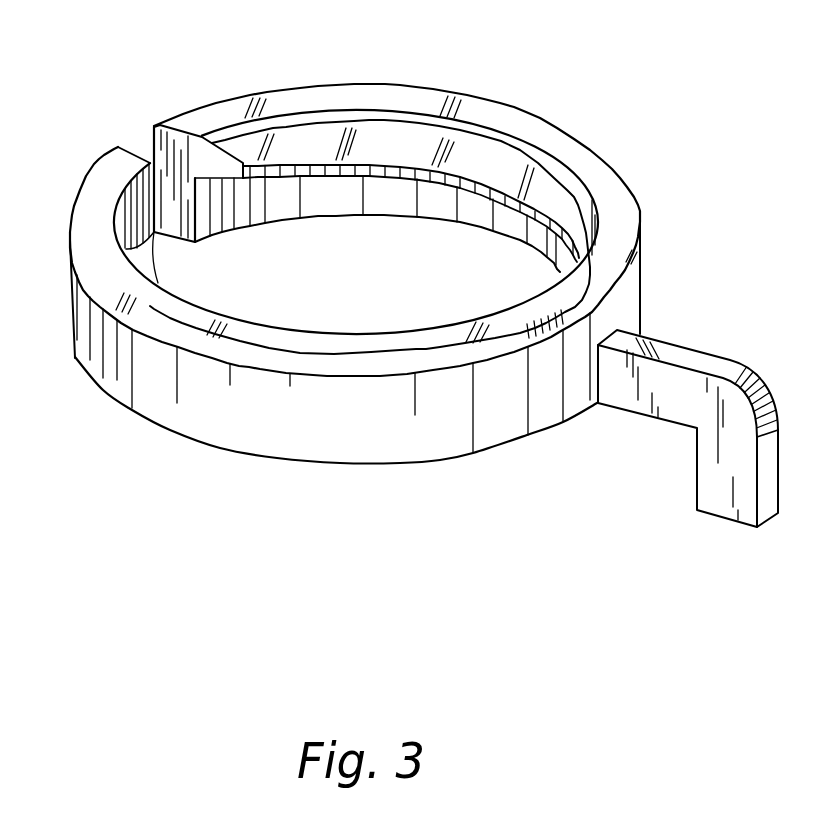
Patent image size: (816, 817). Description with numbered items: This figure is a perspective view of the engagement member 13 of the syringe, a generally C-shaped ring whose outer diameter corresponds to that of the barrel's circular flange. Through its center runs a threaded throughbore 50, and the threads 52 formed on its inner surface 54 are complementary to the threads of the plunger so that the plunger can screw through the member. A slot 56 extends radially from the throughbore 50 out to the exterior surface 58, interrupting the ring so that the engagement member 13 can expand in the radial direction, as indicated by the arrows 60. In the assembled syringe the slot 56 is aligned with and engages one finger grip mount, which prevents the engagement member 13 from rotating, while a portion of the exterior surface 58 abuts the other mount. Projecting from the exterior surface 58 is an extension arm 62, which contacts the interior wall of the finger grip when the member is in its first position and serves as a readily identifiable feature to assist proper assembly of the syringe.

The engagement member 13 is at (413, 447).
The threaded throughbore 50 is at (509, 268).
The threads 52 is at (503, 167).
The inner surface 54 is at (314, 200).
The slot 56 is at (135, 145).
The exterior surface 58 is at (298, 426).
The arrows 60 is at (390, 86).
The extension arm 62 is at (695, 356).